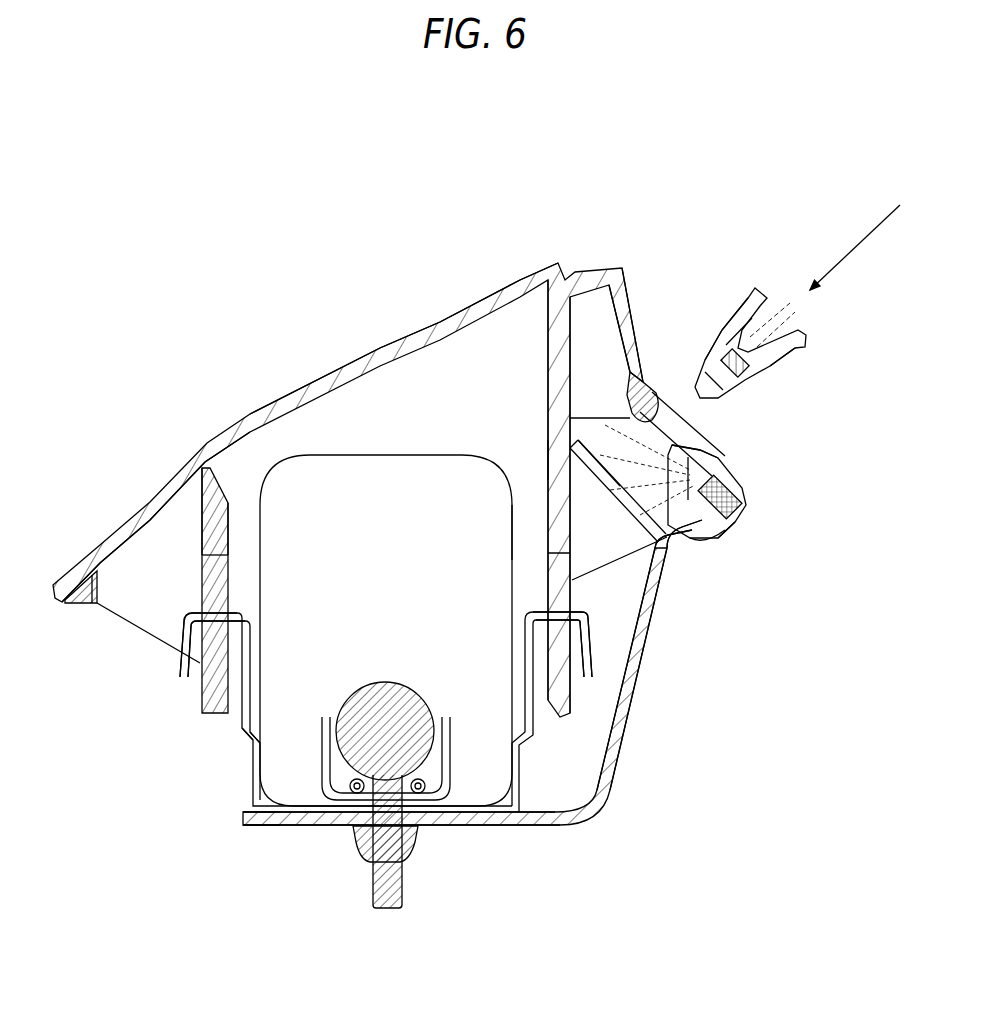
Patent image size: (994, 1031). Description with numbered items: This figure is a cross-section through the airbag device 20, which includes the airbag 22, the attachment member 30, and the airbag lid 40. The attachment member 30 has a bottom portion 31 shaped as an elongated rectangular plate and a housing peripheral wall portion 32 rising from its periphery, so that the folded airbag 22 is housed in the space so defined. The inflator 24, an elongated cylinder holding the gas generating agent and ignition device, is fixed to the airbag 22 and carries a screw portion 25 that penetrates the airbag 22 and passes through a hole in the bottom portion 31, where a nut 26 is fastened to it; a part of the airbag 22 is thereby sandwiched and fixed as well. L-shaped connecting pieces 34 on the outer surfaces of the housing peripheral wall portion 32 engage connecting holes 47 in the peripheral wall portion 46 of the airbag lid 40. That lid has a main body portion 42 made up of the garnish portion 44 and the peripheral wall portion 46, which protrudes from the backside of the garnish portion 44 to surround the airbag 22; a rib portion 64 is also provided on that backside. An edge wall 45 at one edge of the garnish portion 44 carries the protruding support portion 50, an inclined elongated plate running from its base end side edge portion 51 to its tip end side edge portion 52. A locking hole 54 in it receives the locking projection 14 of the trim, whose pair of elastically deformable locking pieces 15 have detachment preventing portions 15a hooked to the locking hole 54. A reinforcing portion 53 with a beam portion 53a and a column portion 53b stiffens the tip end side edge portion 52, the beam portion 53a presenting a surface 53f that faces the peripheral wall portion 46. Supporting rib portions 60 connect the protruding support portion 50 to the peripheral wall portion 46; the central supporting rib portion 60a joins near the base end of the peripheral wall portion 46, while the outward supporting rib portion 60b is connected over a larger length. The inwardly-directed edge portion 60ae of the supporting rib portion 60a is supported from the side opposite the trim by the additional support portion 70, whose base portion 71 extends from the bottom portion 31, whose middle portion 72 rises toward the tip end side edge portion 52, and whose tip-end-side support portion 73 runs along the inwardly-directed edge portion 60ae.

The locking projection 14 is at (654, 398).
The locking piece 15 is at (748, 290).
The detachment preventing portion 15a is at (727, 322).
The airbag device 20 is at (598, 195).
The airbag 22 is at (392, 455).
The inflator 24 is at (385, 682).
The screw portion 25 is at (405, 868).
The nut 26 is at (410, 845).
The attachment member 30 is at (248, 800).
The bottom portion 31 is at (335, 826).
The housing peripheral wall portion 32 is at (245, 745).
The connecting piece 34 is at (180, 668).
The airbag lid 40 is at (207, 440).
The main body portion 42 is at (170, 487).
The garnish portion 44 is at (497, 290).
The edge wall 45 is at (627, 300).
The peripheral wall portion 46 is at (205, 530).
The connecting hole 47 is at (230, 558).
The protruding support portion 50 is at (710, 452).
The base end side edge portion 51 is at (610, 372).
The tip end side edge portion 52 is at (740, 473).
The reinforcing portion 53 is at (633, 525).
The beam portion 53a is at (692, 535).
The column portion 53b is at (722, 520).
The surface 53f is at (630, 490).
The locking hole 54 is at (692, 447).
The supporting rib portion 60 is at (723, 578).
The supporting rib portion 60a is at (675, 548).
The supporting rib portion 60b is at (655, 552).
The inwardly-directed edge portion 60ae is at (548, 462).
The rib portion 64 is at (117, 605).
The additional support portion 70 is at (566, 828).
The base portion 71 is at (502, 826).
The middle portion 72 is at (590, 780).
The tip-end-side support portion 73 is at (510, 505).